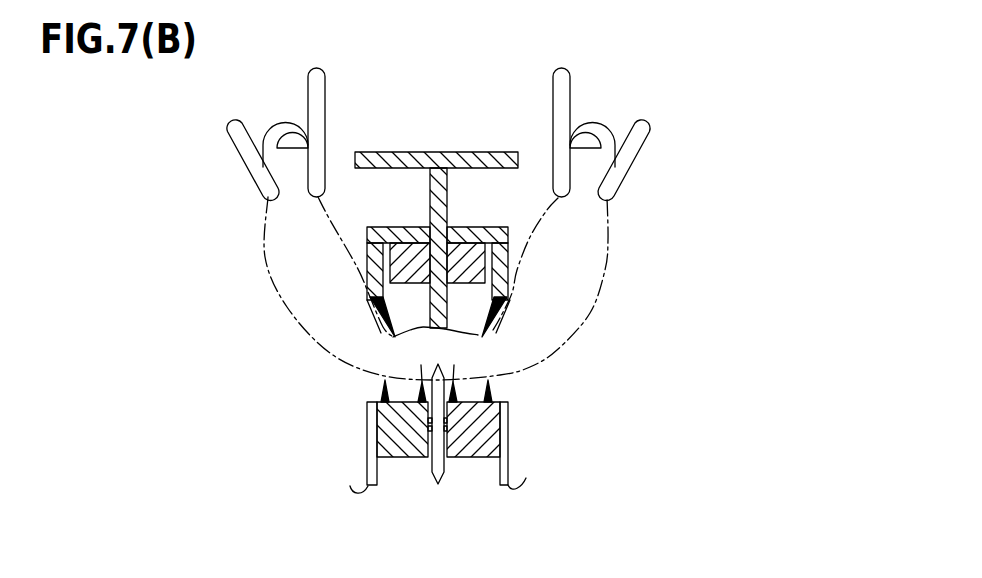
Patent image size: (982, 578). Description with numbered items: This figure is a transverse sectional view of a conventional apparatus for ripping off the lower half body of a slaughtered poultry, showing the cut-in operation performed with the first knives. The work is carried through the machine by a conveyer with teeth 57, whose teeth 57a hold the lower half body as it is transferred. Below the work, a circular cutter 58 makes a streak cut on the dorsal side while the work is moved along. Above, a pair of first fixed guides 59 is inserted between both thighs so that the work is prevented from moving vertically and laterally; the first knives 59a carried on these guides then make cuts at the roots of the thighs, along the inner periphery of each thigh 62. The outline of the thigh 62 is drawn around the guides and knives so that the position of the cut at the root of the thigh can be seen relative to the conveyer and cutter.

The conveyer with teeth 57 is at (493, 450).
The teeth 57a is at (489, 383).
The circular cutter 58 is at (443, 470).
The first fixed guide 59 is at (477, 226).
The first knife 59a is at (500, 323).
The thigh 62 is at (590, 281).